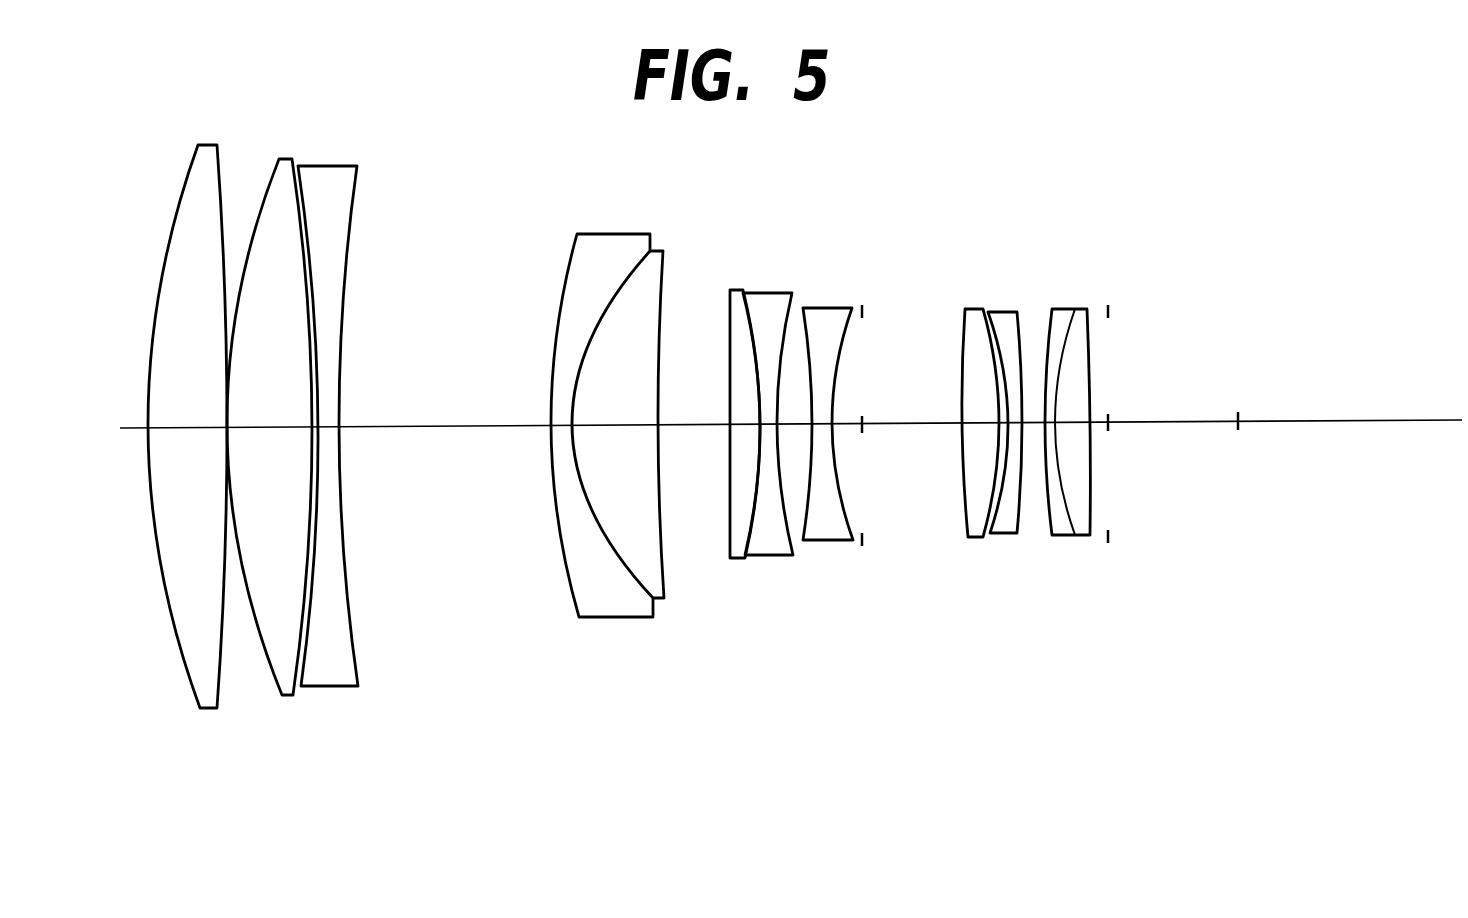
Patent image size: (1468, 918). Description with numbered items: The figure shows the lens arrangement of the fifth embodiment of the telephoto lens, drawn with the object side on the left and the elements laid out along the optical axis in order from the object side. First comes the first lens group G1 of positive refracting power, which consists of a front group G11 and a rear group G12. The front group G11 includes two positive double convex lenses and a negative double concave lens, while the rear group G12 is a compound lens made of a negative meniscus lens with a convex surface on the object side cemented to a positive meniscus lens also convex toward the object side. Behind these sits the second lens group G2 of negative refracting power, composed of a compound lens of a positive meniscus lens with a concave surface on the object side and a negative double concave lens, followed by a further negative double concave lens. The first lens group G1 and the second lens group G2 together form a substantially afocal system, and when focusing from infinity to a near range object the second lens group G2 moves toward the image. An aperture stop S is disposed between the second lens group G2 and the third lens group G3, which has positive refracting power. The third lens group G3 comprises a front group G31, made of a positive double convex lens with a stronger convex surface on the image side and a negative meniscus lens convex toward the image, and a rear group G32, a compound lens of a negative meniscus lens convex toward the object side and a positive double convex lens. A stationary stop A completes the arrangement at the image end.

The first lens group G1 is at (415, 480).
The front group of the first lens group G11 is at (378, 705).
The rear group of the first lens group G12 is at (617, 457).
The second lens group G2 is at (868, 560).
The third lens group G3 is at (1034, 476).
The front group of the third lens group G31 is at (1030, 535).
The rear group of the third lens group G32 is at (1073, 451).
The aperture stop S is at (862, 405).
The stationary stop A is at (1107, 405).